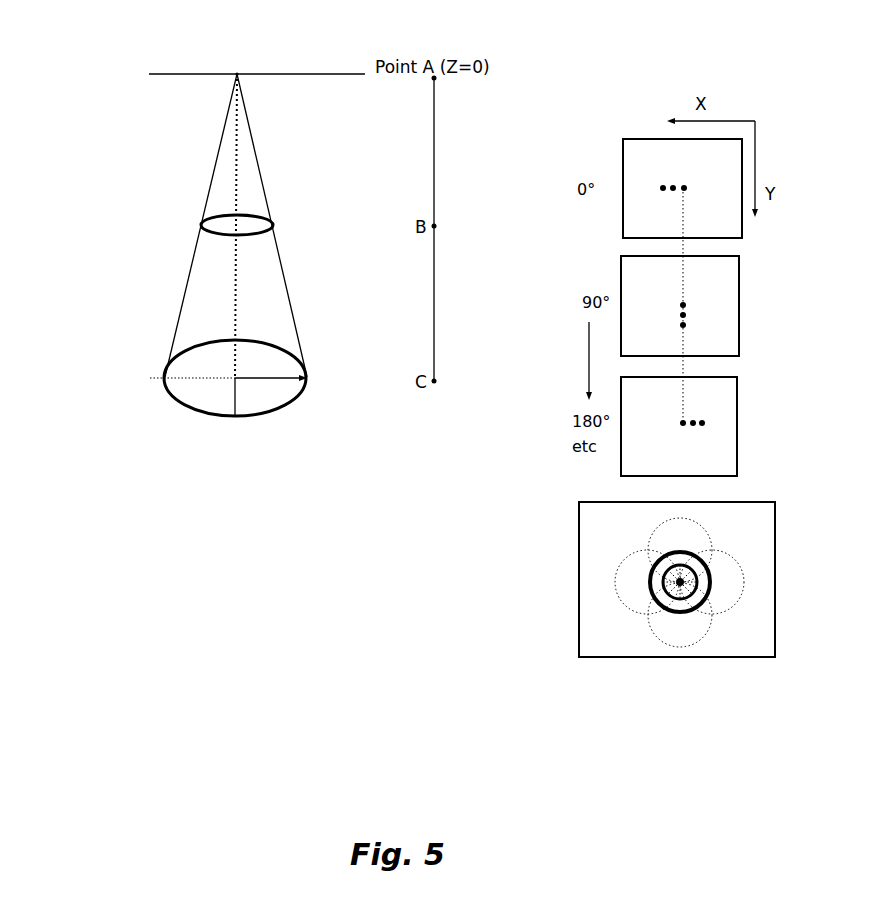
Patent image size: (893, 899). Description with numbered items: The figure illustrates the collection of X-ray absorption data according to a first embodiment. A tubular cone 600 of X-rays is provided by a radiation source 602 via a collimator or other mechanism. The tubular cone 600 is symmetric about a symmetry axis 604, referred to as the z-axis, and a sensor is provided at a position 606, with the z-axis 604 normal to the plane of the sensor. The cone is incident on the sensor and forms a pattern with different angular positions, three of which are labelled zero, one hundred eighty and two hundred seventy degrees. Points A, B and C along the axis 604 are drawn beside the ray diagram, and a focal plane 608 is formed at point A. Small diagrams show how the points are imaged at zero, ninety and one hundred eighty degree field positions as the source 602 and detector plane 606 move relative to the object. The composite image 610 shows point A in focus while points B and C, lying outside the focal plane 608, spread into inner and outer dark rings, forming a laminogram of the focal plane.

The tubular cone 600 is at (173, 311).
The radiation source 602 is at (226, 68).
The symmetry axis 604 is at (225, 149).
The sensor position 606 is at (183, 407).
The focal plane 608 is at (340, 75).
The composite image 610 is at (578, 567).